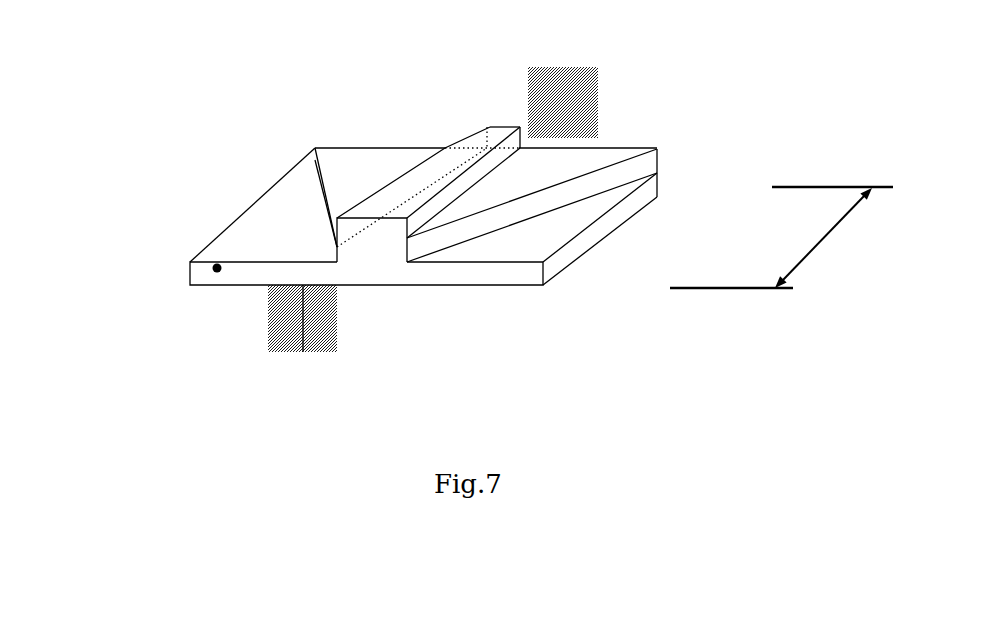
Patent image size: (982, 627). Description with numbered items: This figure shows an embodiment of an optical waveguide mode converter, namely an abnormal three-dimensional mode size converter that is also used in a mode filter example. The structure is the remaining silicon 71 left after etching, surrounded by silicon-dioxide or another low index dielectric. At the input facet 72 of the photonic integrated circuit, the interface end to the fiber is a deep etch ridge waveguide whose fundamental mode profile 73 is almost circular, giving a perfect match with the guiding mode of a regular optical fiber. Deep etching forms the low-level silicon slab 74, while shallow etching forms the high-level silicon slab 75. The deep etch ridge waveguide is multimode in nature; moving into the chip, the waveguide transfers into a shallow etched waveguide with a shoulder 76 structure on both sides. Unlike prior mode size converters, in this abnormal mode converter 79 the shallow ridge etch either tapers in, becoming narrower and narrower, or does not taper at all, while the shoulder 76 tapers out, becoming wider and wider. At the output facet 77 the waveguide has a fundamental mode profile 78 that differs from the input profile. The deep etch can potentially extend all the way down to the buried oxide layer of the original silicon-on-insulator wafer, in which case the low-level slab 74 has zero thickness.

The remaining silicon 71 is at (214, 268).
The input facet 72 is at (356, 248).
The fundamental mode profile at input facet 73 is at (333, 325).
The low-level silicon slab 74 is at (595, 238).
The high-level silicon slab 75 is at (536, 206).
The shoulder of shallow etched ridge waveguide 76 is at (345, 160).
The output facet 77 is at (484, 119).
The fundamental mode profile at output facet 78 is at (600, 105).
The abnormal mode converter 79 is at (781, 237).